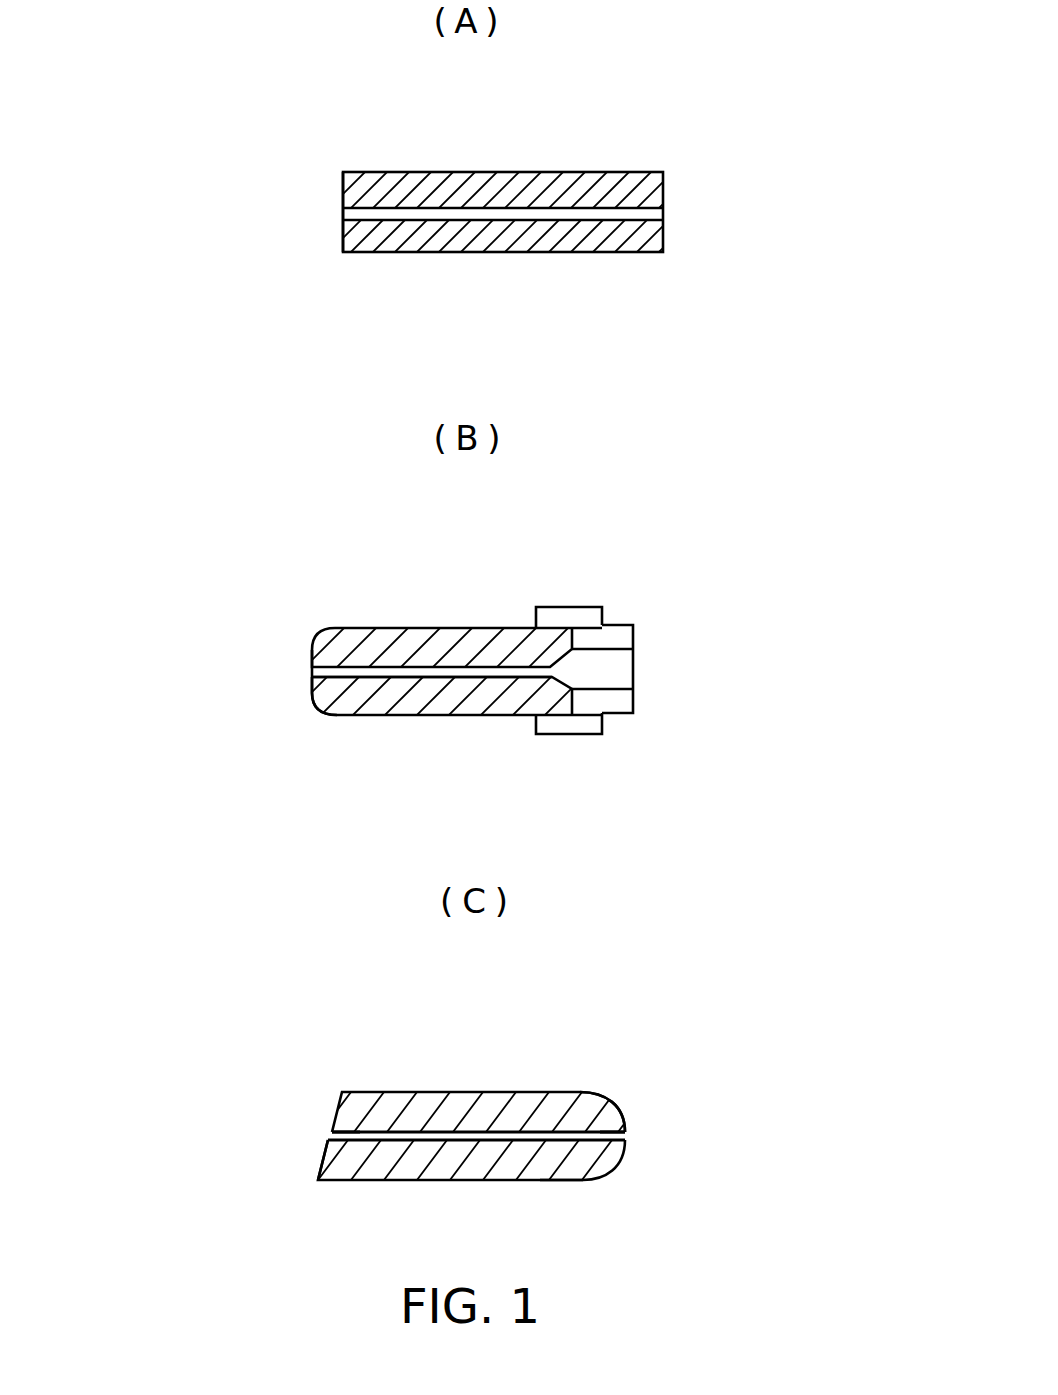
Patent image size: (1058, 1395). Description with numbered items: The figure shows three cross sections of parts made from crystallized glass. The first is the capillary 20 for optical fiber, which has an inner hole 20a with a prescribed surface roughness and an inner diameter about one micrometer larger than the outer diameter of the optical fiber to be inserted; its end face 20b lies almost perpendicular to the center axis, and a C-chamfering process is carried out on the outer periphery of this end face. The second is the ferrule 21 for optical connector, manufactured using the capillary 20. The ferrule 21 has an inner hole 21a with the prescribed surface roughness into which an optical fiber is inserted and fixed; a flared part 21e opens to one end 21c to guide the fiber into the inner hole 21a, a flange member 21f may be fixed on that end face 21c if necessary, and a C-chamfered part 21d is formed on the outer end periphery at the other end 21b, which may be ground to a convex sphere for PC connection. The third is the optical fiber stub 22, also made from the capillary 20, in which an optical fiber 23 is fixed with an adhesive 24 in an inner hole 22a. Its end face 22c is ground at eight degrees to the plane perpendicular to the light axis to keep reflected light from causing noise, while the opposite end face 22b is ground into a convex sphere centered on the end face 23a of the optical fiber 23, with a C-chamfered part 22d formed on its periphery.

The capillary for optical fiber 20 is at (530, 160).
The inner hole 20a is at (455, 207).
The end face 20b is at (342, 209).
The ferrule for optical connector 21 is at (450, 600).
The inner hole 21a is at (430, 665).
The other end 21b is at (308, 665).
The one end 21c is at (578, 633).
The C-chamfered part 21d is at (322, 712).
The flared part 21e is at (572, 660).
The flange member 21f is at (605, 715).
The optical fiber stub 22 is at (378, 1087).
The inner hole 22a is at (520, 1127).
The end face 22b is at (612, 1113).
The end face 22c is at (328, 1141).
The C-chamfered part 22d is at (587, 1180).
The optical fiber 23 is at (332, 1132).
The end face of the optical fiber 23a is at (627, 1133).
The adhesive 24 is at (627, 1141).